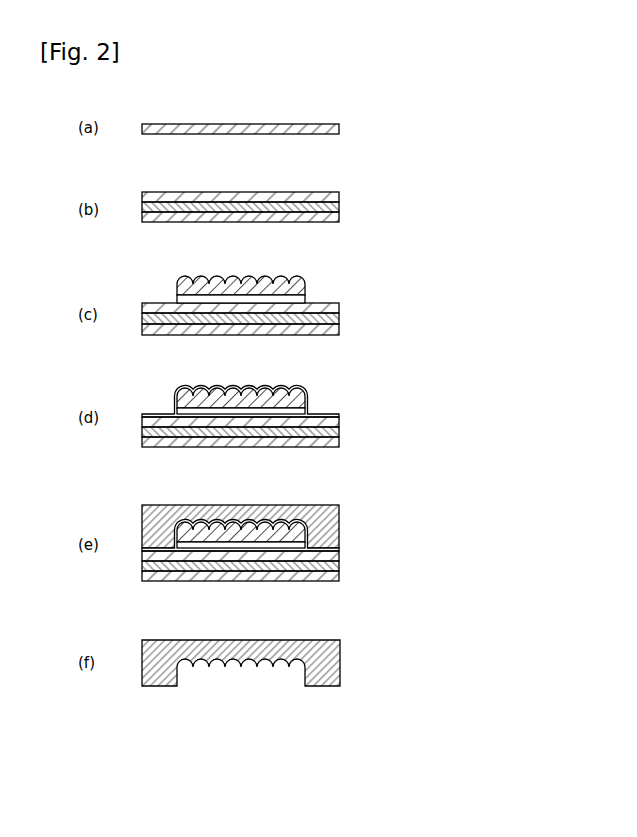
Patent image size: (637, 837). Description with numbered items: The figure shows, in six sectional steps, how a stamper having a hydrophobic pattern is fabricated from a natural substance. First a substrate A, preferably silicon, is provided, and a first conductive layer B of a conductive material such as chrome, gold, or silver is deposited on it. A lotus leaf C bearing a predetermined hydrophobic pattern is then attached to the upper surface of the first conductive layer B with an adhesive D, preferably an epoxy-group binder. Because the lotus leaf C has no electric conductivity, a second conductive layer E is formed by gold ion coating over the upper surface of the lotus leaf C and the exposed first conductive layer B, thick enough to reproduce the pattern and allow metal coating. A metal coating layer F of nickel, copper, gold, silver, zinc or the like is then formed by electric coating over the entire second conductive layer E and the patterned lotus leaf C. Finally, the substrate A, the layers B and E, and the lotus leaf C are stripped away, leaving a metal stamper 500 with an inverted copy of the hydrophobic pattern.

The substrate A is at (339, 127).
The first conductive layer B is at (343, 192).
The lotus leaf C is at (305, 279).
The adhesive D is at (300, 296).
The second conductive layer E is at (298, 387).
The metal coating layer F is at (330, 516).
The metal stamper 500 is at (333, 660).